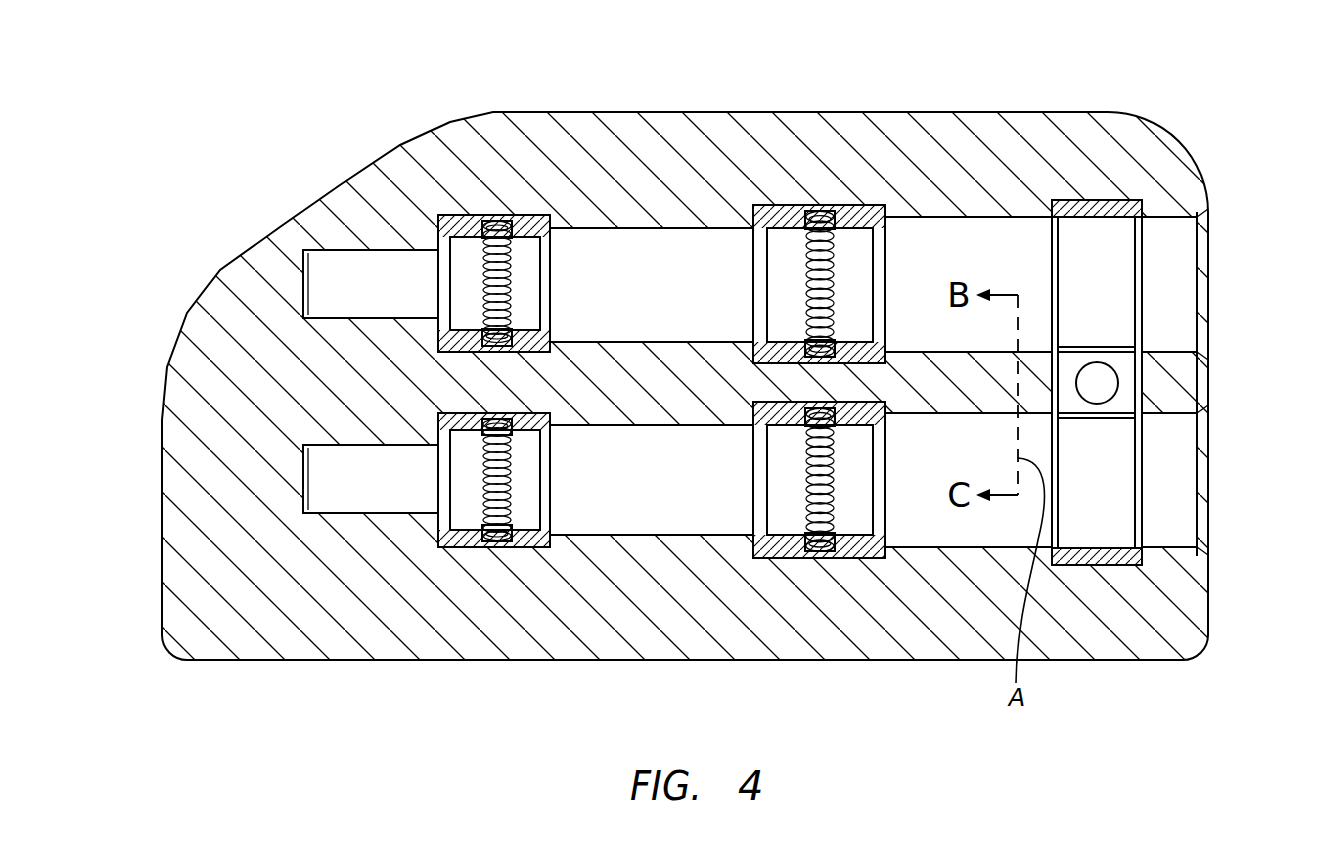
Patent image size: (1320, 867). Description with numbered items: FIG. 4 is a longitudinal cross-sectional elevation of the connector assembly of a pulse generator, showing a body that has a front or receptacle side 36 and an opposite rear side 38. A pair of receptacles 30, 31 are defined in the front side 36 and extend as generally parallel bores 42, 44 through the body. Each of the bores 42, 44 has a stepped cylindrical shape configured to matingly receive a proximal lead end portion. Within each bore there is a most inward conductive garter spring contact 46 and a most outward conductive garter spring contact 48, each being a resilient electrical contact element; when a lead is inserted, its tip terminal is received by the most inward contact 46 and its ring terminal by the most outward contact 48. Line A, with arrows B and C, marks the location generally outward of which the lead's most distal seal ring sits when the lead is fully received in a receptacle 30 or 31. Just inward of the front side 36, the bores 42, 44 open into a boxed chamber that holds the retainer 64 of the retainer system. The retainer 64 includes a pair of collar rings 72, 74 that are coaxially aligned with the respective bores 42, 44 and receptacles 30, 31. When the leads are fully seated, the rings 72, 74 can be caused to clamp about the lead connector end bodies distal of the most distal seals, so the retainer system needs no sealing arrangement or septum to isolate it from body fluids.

The receptacle 30 is at (1220, 311).
The receptacle 31 is at (1219, 480).
The front or receptacle side 36 is at (724, 386).
The rear side 38 is at (138, 541).
The bore 42 is at (677, 202).
The bore 44 is at (677, 580).
The most inward conductive garter spring contact 46 is at (490, 389).
The most outward conductive garter spring contact 48 is at (819, 398).
The retainer 64 is at (1171, 465).
The collar ring 72 is at (1174, 270).
The collar ring 74 is at (1168, 485).